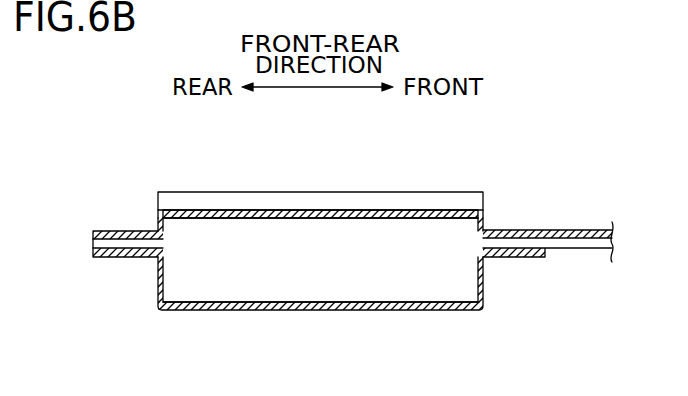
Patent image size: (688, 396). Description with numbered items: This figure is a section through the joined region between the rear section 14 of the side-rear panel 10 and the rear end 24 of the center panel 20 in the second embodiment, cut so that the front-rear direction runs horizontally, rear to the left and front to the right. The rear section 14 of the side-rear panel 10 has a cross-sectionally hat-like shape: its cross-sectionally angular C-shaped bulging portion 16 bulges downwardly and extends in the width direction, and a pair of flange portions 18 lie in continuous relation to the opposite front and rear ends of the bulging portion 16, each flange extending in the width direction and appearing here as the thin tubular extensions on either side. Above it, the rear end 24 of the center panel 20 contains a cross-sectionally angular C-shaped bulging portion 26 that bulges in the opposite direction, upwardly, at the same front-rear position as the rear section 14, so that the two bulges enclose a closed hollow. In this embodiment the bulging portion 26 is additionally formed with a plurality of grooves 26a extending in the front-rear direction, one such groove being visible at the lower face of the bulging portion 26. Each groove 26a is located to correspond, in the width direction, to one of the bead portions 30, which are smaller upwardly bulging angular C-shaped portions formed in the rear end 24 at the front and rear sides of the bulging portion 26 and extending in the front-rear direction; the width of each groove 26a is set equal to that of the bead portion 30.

The side-rear panel 10 is at (344, 288).
The rear section 14 is at (430, 314).
The bulging portion 16 is at (322, 310).
The flange portions 18 is at (120, 260).
The center panel 20 is at (320, 165).
The rear end 24 is at (412, 190).
The bulging portion 26 is at (320, 192).
The grooves 26a is at (238, 213).
The bead portions 30 is at (118, 232).